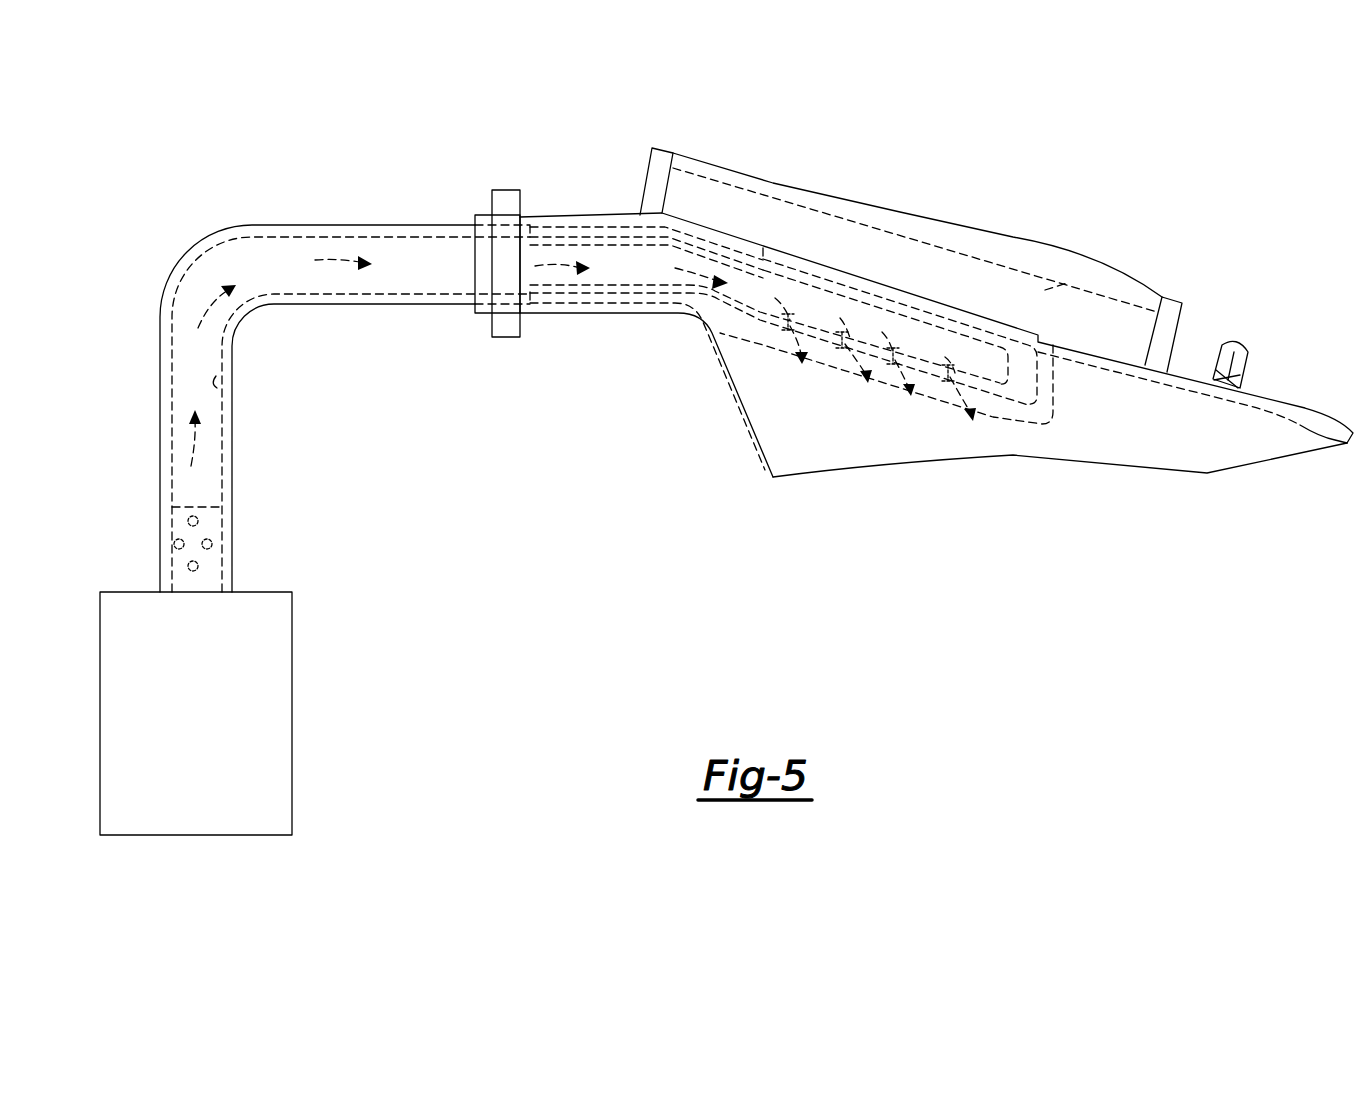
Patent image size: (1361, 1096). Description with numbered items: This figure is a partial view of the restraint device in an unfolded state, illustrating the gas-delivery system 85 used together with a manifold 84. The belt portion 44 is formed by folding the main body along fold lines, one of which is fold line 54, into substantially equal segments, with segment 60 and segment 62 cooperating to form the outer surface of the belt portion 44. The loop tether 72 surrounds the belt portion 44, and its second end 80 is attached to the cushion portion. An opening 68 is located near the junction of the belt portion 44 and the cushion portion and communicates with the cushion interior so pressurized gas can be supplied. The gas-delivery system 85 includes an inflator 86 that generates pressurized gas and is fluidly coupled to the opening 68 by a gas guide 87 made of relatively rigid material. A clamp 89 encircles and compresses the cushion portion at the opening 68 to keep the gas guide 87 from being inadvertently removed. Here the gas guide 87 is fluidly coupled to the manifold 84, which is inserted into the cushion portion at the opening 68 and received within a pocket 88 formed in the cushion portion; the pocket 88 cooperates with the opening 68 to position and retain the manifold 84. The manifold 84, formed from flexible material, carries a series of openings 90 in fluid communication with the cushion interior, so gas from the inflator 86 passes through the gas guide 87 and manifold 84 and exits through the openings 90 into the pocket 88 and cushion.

The belt portion 44 is at (1172, 305).
The fold line 54 is at (1065, 283).
The segment 60 is at (1027, 263).
The segment 62 is at (1010, 293).
The opening 68 is at (627, 302).
The loop tether 72 is at (1236, 355).
The second end 80 is at (1236, 380).
The manifold 84 is at (598, 232).
The gas-delivery system 85 is at (168, 269).
The inflator 86 is at (292, 653).
The gas guide 87 is at (222, 390).
The pocket 88 is at (1060, 388).
The clamp 89 is at (506, 190).
The openings 90 is at (810, 330).